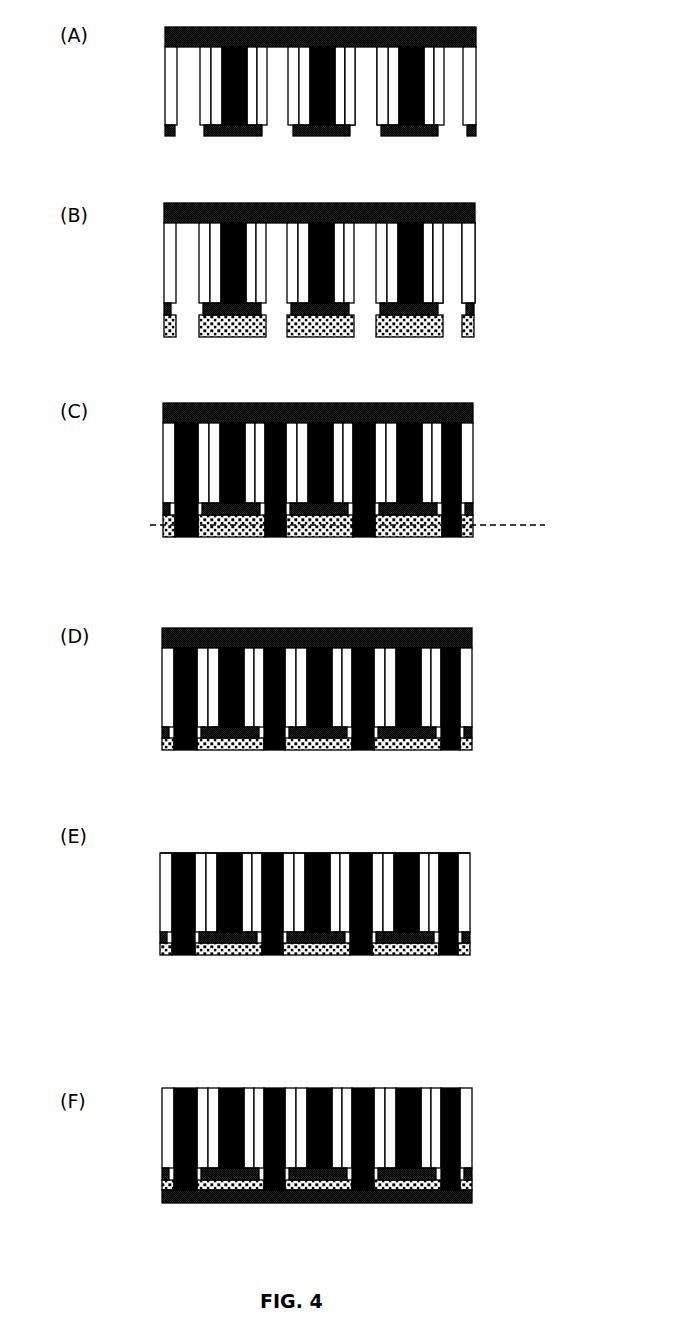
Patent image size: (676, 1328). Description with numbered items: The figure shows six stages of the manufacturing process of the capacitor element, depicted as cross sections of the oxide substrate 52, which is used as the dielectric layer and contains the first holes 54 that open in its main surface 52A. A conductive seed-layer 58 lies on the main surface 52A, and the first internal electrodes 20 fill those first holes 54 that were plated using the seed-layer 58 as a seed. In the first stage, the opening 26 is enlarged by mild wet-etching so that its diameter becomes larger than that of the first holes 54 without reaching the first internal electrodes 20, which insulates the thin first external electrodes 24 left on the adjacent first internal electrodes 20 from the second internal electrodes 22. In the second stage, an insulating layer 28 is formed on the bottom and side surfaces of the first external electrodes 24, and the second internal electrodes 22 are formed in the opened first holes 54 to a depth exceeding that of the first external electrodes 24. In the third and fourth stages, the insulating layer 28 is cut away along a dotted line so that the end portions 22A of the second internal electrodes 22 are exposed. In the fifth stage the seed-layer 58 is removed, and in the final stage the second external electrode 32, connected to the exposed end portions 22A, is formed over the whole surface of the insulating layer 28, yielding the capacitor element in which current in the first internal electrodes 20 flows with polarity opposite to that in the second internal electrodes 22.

The conductive seed-layer 58 is at (476, 36).
The oxide substrate 52 is at (476, 73).
The first holes 54 is at (365, 113).
The first internal electrodes 20 is at (320, 108).
The second internal electrodes 22 is at (185, 520).
The end portions of the second internal electrodes 22A is at (447, 750).
The first external electrode 24 is at (228, 137).
The opening 26 is at (177, 133).
The insulating layer 28 is at (412, 337).
The second external electrode 32 is at (472, 1198).
The main surface 52A is at (420, 853).